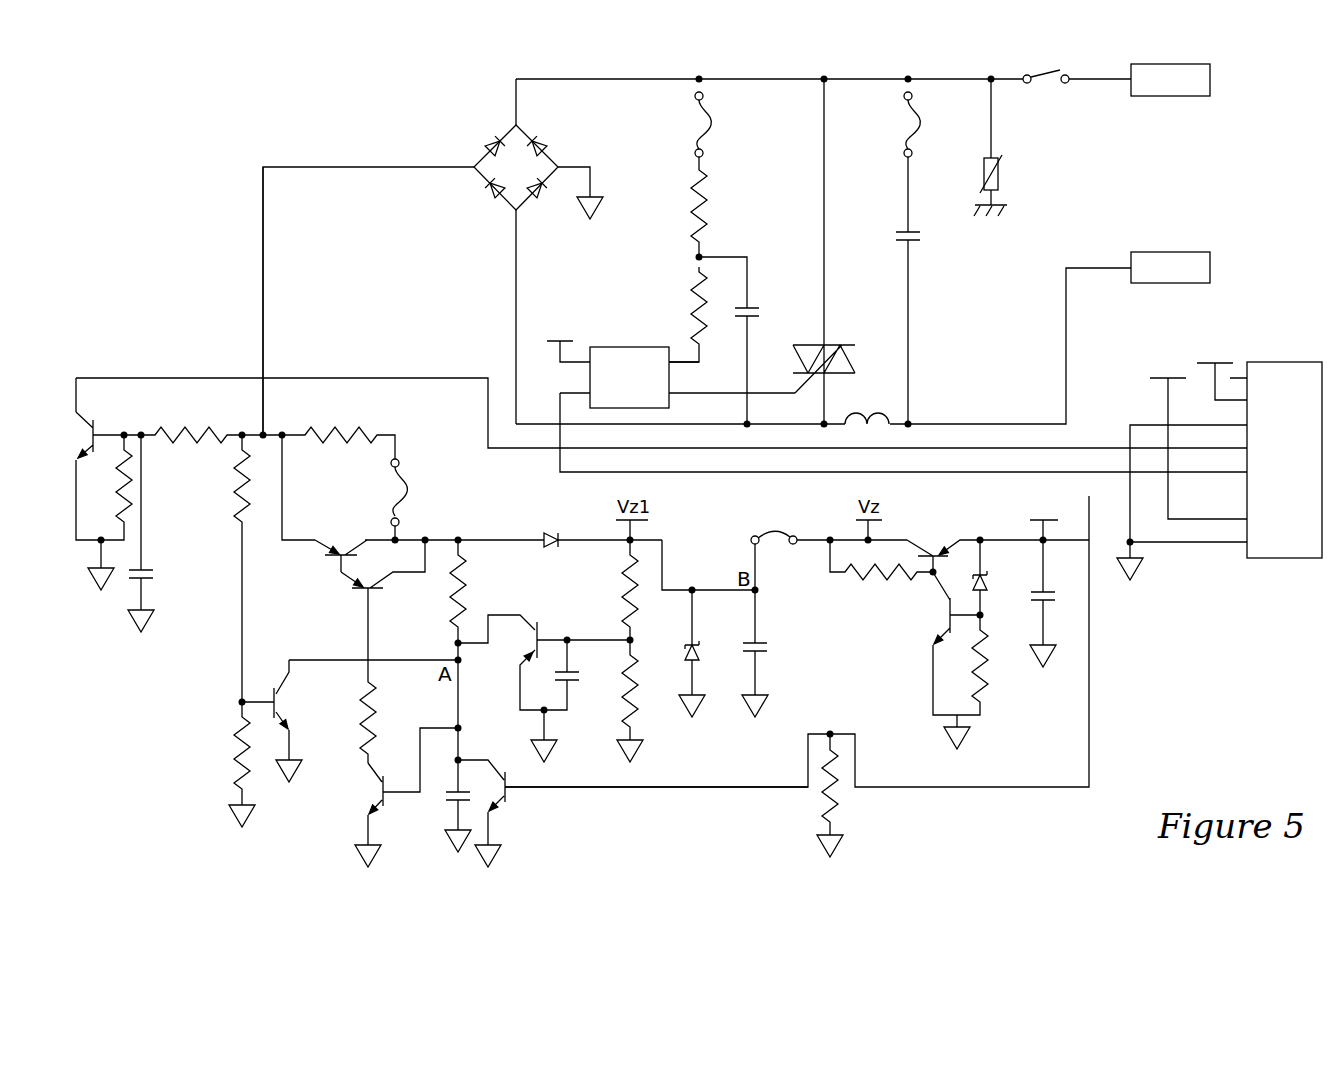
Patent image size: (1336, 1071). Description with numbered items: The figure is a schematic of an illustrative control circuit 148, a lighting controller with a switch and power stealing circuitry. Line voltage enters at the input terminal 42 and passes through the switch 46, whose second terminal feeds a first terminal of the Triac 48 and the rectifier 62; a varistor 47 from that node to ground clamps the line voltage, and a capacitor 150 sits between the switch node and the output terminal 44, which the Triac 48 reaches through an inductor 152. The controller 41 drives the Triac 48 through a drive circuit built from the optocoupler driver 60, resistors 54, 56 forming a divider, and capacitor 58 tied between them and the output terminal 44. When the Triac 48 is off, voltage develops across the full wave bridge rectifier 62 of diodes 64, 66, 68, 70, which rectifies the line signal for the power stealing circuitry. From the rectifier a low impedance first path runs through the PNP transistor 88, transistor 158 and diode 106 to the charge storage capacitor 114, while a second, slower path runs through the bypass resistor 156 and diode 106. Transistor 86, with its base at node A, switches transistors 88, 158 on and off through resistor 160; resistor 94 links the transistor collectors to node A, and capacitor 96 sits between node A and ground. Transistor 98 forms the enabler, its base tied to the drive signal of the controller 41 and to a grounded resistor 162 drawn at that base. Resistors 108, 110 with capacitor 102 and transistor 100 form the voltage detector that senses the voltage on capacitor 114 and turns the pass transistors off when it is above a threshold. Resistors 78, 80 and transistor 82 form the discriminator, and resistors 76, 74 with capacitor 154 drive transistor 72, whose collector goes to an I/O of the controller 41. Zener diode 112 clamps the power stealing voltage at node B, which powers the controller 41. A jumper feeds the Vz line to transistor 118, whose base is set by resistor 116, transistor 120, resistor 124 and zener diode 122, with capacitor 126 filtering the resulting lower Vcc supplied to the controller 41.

The controller 41 is at (1282, 362).
The input terminal 42 is at (1172, 96).
The output terminal 44 is at (1172, 252).
The switch 46 is at (1052, 85).
The varistor 47 is at (1003, 176).
The Triac 48 is at (836, 345).
The resistor 54 is at (692, 196).
The resistor 56 is at (692, 301).
The capacitor 58 is at (757, 302).
The driver 60 is at (622, 347).
The rectifier 62 is at (485, 110).
The diode 64 is at (545, 140).
The diode 66 is at (545, 200).
The diode 68 is at (485, 195).
The diode 70 is at (488, 140).
The transistor 72 is at (88, 425).
The resistor 74 is at (119, 508).
The resistor 76 is at (201, 428).
The resistor 78 is at (233, 506).
The resistor 80 is at (233, 749).
The transistor 82 is at (272, 682).
The transistor 86 is at (373, 794).
The transistor 88 is at (339, 548).
The resistor 94 is at (467, 598).
The capacitor 96 is at (441, 808).
The transistor 98 is at (504, 805).
The transistor 100 is at (526, 650).
The capacitor 102 is at (574, 686).
The diode 106 is at (548, 531).
The resistor 108 is at (623, 609).
The resistor 110 is at (646, 716).
The zener diode 112 is at (688, 650).
The capacitor 114 is at (766, 656).
The resistor 116 is at (856, 580).
The transistor 118 is at (927, 552).
The transistor 120 is at (946, 617).
The zener diode 122 is at (986, 580).
The resistor 124 is at (991, 690).
The capacitor 126 is at (1059, 606).
The control circuit 148 is at (276, 141).
The capacitor 150 is at (918, 246).
The inductor 152 is at (882, 420).
The capacitor 154 is at (131, 571).
The bypass resistor 156 is at (351, 428).
The transistor 158 is at (352, 590).
The resistor 160 is at (365, 700).
The resistor 162 is at (823, 797).